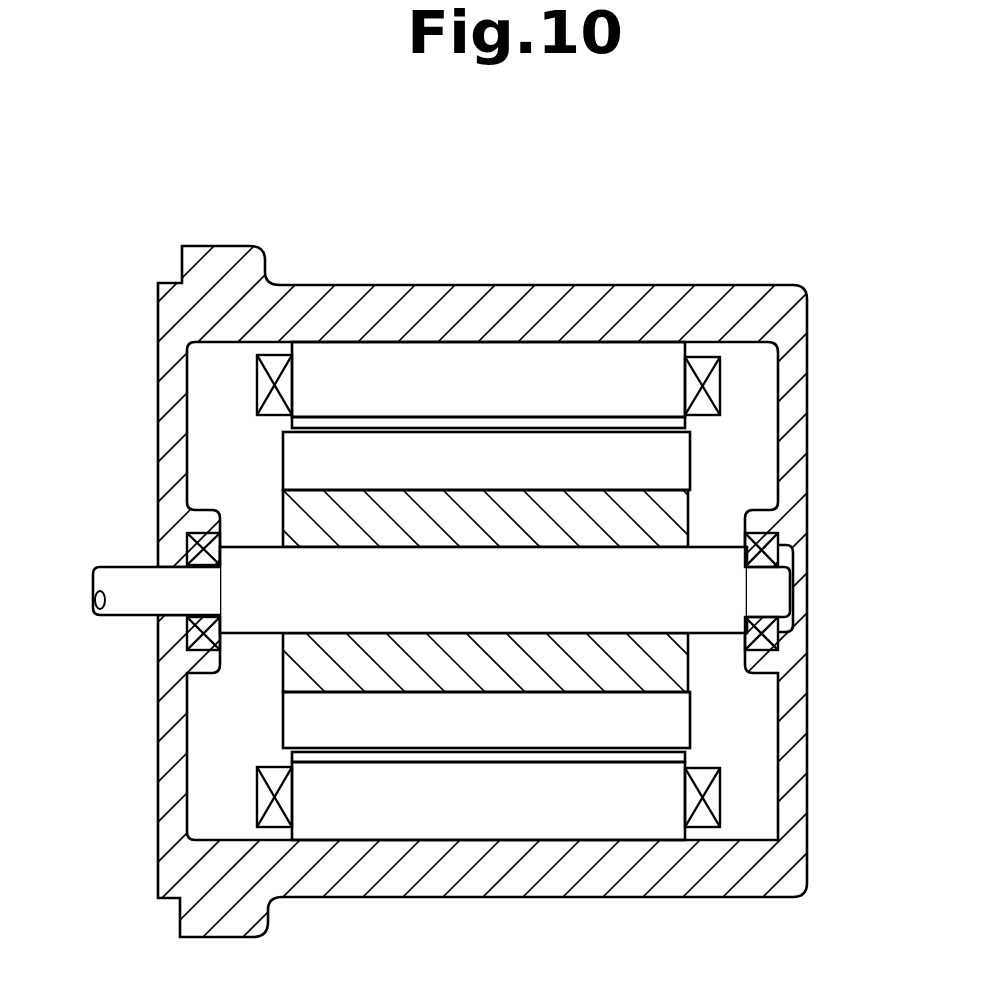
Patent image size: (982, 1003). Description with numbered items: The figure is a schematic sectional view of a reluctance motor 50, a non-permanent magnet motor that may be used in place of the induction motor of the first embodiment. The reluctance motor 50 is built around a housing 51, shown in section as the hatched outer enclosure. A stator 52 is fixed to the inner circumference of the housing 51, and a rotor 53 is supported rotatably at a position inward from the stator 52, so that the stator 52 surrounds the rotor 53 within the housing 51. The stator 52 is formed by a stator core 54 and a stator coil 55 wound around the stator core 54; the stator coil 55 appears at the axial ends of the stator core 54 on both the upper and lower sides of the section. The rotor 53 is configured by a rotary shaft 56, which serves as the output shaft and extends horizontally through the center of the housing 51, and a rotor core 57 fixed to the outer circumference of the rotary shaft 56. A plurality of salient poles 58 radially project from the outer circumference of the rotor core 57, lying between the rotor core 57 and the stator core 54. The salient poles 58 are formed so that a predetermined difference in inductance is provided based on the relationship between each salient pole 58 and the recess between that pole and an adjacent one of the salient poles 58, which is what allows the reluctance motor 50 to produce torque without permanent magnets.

The reluctance motor 50 is at (112, 273).
The housing 51 is at (708, 288).
The stator 52 is at (488, 498).
The rotor 53 is at (473, 557).
The stator core 54 is at (382, 353).
The stator coil 55 is at (413, 228).
The rotary shaft 56 is at (246, 560).
The rotor core 57 is at (668, 522).
The salient poles 58 is at (682, 455).